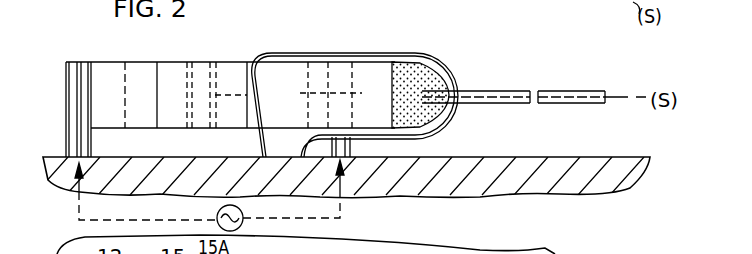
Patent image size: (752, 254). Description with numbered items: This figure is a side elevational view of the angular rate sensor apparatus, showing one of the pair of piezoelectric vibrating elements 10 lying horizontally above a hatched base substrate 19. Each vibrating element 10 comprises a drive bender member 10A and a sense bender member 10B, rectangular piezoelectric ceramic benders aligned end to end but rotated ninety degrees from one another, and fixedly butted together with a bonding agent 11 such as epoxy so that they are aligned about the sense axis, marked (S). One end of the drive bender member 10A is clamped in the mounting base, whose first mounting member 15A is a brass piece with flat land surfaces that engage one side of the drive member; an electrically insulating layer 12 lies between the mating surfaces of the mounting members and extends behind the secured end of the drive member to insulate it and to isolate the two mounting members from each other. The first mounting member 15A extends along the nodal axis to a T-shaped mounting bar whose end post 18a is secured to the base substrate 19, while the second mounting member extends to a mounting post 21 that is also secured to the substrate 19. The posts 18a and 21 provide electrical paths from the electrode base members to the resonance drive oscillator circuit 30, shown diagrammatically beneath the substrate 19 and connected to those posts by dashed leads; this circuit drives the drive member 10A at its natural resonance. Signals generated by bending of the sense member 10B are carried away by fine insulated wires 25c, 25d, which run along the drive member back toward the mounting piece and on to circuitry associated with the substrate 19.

The piezoelectric vibrating element 10 is at (563, 84).
The drive bender member 10A is at (320, 75).
The sense bender member 10B is at (572, 104).
The bonding agent 11 is at (414, 63).
The electrically insulating layer 12 is at (222, 60).
The first mounting member 15A is at (137, 65).
The end post 18a is at (92, 142).
The base substrate 19 is at (124, 184).
The mounting post 21 is at (357, 148).
The fine insulated wire 25c is at (258, 139).
The capsule rounded end 25d is at (455, 110).
The resonance drive oscillator circuit 30 is at (217, 213).